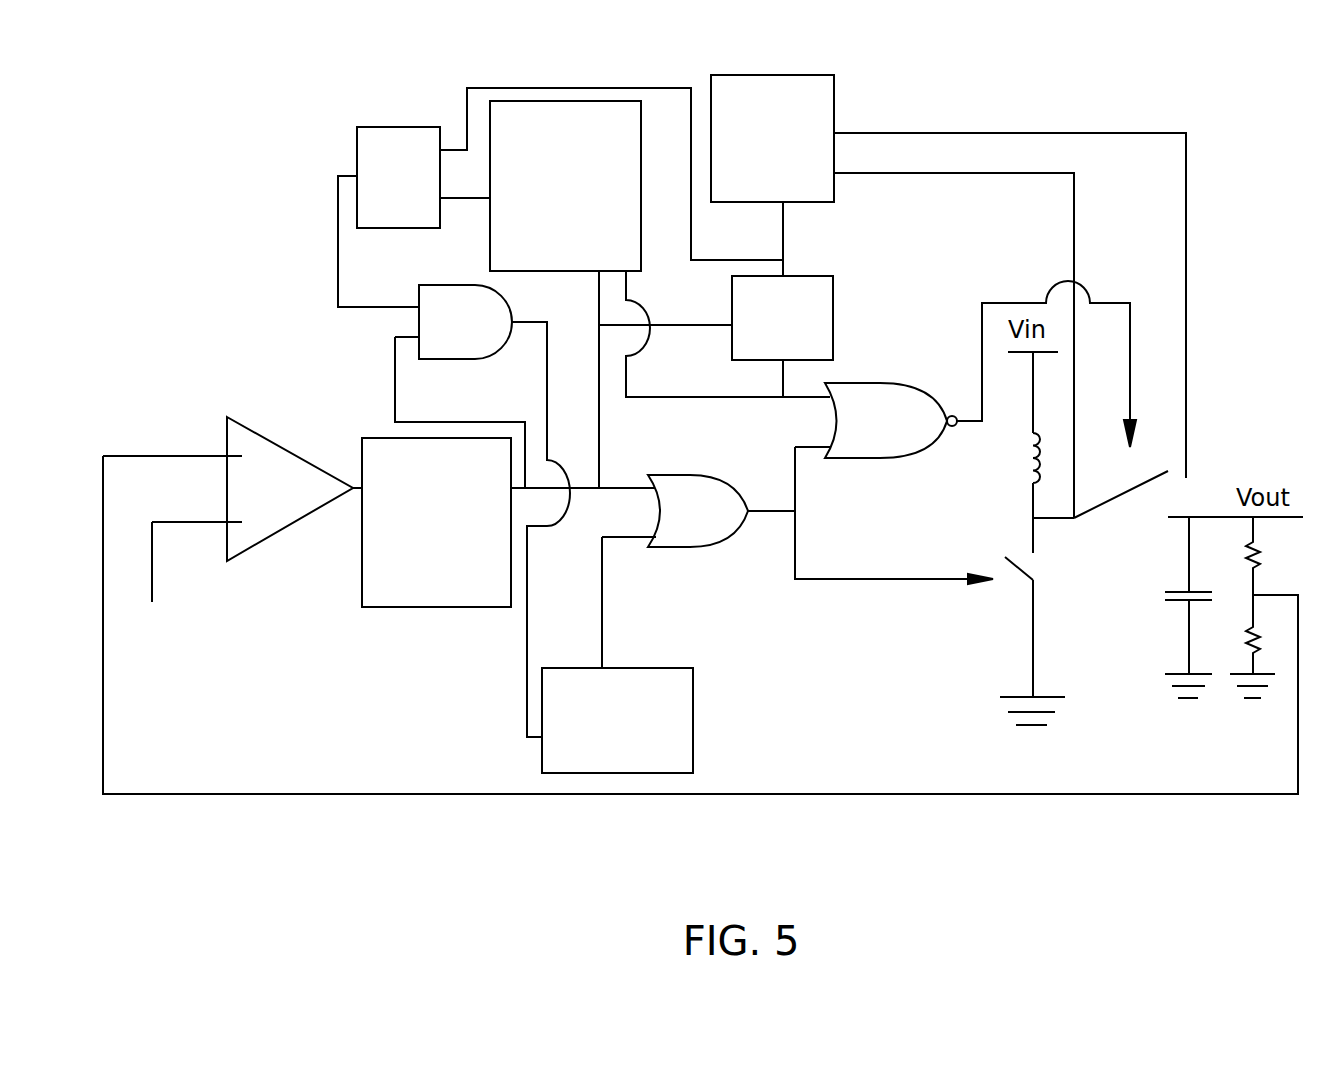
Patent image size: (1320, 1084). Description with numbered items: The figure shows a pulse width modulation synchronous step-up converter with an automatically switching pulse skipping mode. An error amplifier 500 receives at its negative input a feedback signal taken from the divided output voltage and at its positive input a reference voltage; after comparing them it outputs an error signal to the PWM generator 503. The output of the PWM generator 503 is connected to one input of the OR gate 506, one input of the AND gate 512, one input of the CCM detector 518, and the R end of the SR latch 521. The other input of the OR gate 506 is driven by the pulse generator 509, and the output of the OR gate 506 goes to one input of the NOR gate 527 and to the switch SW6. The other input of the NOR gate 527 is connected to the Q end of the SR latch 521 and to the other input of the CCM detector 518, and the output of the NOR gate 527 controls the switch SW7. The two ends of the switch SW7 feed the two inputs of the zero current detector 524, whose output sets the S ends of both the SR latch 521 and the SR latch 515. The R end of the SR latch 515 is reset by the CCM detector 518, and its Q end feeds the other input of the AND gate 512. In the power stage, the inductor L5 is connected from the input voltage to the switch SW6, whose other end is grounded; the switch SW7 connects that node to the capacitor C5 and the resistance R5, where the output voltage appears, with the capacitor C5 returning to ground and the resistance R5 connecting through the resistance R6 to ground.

The error amplifier 500 is at (270, 441).
The PWM generator 503 is at (508, 522).
The OR gate 506 is at (797, 515).
The pulse generator 509 is at (617, 655).
The AND gate 512 is at (482, 510).
The SR latch 515 is at (395, 127).
The CCM detector 518 is at (660, 294).
The SR latch 521 is at (833, 312).
The zero current detector 524 is at (948, 296).
The NOR gate 527 is at (965, 369).
The inductor L5 is at (1036, 475).
The switch SW6 is at (1045, 621).
The switch SW7 is at (1188, 498).
The capacitor C5 is at (1207, 607).
The resistance R5 is at (1271, 556).
The resistance R6 is at (1263, 646).